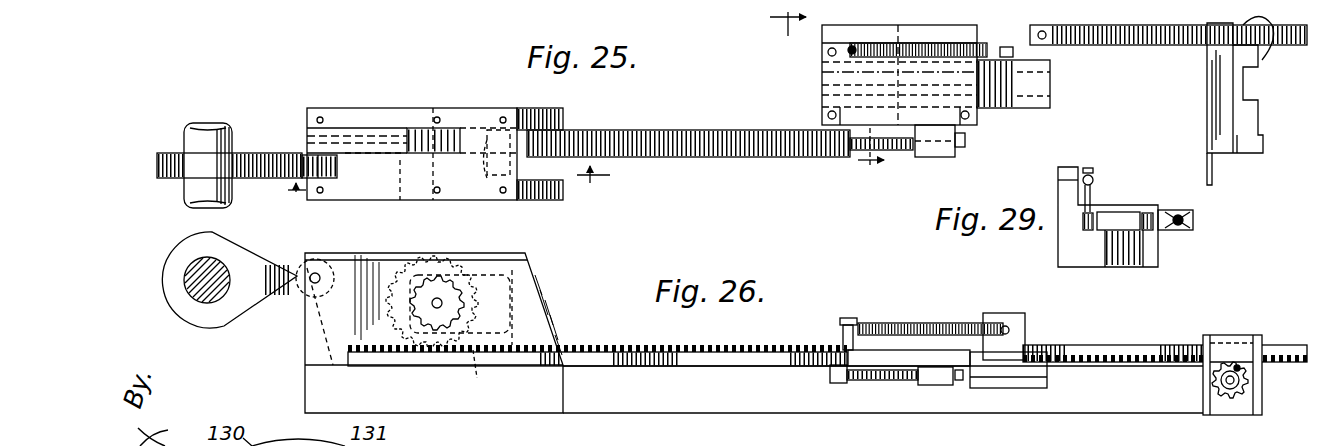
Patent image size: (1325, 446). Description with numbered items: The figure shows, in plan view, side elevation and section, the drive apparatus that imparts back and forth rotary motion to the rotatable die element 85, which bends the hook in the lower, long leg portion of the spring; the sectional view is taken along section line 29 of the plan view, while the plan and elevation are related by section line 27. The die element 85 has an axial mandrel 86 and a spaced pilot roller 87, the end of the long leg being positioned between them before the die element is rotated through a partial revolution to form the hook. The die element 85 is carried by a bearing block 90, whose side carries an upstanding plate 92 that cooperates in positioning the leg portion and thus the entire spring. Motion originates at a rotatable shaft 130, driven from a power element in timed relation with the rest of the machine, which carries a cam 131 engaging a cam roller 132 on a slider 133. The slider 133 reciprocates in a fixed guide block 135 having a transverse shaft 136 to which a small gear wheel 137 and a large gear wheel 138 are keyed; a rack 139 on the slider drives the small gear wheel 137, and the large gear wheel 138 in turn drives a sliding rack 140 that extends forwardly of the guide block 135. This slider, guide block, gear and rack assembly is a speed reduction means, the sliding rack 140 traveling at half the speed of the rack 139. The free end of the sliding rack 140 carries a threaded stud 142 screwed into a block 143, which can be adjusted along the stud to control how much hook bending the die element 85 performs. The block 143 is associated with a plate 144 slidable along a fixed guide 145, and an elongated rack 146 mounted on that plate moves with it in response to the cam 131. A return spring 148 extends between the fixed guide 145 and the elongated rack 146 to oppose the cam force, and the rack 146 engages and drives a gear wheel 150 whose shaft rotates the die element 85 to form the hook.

In FIG. 25, the section line 27 is at (440, 185).
In FIG. 25, the section line 29 is at (820, 102).
In FIG. 25, the rotatable die element 85 is at (1233, 170).
In FIG. 26, the rotatable die element 85 is at (1200, 385).
In FIG. 26, the axial mandrel 86 is at (1226, 392).
In FIG. 26, the pilot roller 87 is at (1242, 370).
In FIG. 25, the bearing block 90 is at (1235, 104).
In FIG. 26, the bearing block 90 is at (1236, 335).
In FIG. 26, the upstanding plate 92 is at (1205, 396).
In FIG. 25, the rotatable shaft 130 is at (185, 188).
In FIG. 26, the rotatable shaft 130 is at (212, 300).
In FIG. 25, the cam 131 is at (255, 150).
In FIG. 26, the cam 131 is at (236, 240).
In FIG. 25, the cam roller 132 is at (325, 178).
In FIG. 26, the cam roller 132 is at (312, 259).
In FIG. 25, the slider 133 is at (375, 165).
In FIG. 26, the slider 133 is at (318, 338).
In FIG. 25, the fixed guide block 135 is at (462, 202).
In FIG. 26, the fixed guide block 135 is at (410, 399).
In FIG. 25, the transverse shaft 136 is at (433, 108).
In FIG. 26, the transverse shaft 136 is at (410, 301).
In FIG. 25, the small gear wheel 137 is at (400, 200).
In FIG. 26, the small gear wheel 137 is at (479, 376).
In FIG. 25, the large gear wheel 138 is at (487, 140).
In FIG. 26, the large gear wheel 138 is at (470, 275).
In FIG. 25, the rack 139 is at (490, 152).
In FIG. 26, the rack 139 is at (520, 297).
In FIG. 25, the sliding rack 140 is at (683, 158).
In FIG. 26, the sliding rack 140 is at (700, 349).
In FIG. 25, the threaded stud 142 is at (898, 152).
In FIG. 29, the threaded stud 142 is at (1182, 226).
In FIG. 26, the threaded stud 142 is at (862, 382).
In FIG. 25, the block 143 is at (957, 131).
In FIG. 29, the block 143 is at (1198, 200).
In FIG. 26, the block 143 is at (941, 387).
In FIG. 25, the plate 144 is at (1050, 80).
In FIG. 29, the plate 144 is at (1118, 215).
In FIG. 26, the plate 144 is at (1047, 378).
In FIG. 25, the fixed guide 145 is at (822, 60).
In FIG. 29, the fixed guide 145 is at (1112, 267).
In FIG. 26, the fixed guide 145 is at (899, 350).
In FIG. 25, the elongated rack 146 is at (1150, 47).
In FIG. 29, the elongated rack 146 is at (1058, 218).
In FIG. 26, the elongated rack 146 is at (1103, 345).
In FIG. 25, the return spring 148 is at (885, 57).
In FIG. 29, the return spring 148 is at (1093, 180).
In FIG. 26, the return spring 148 is at (952, 322).
In FIG. 25, the gear wheel 150 is at (1274, 47).
In FIG. 26, the gear wheel 150 is at (1243, 420).